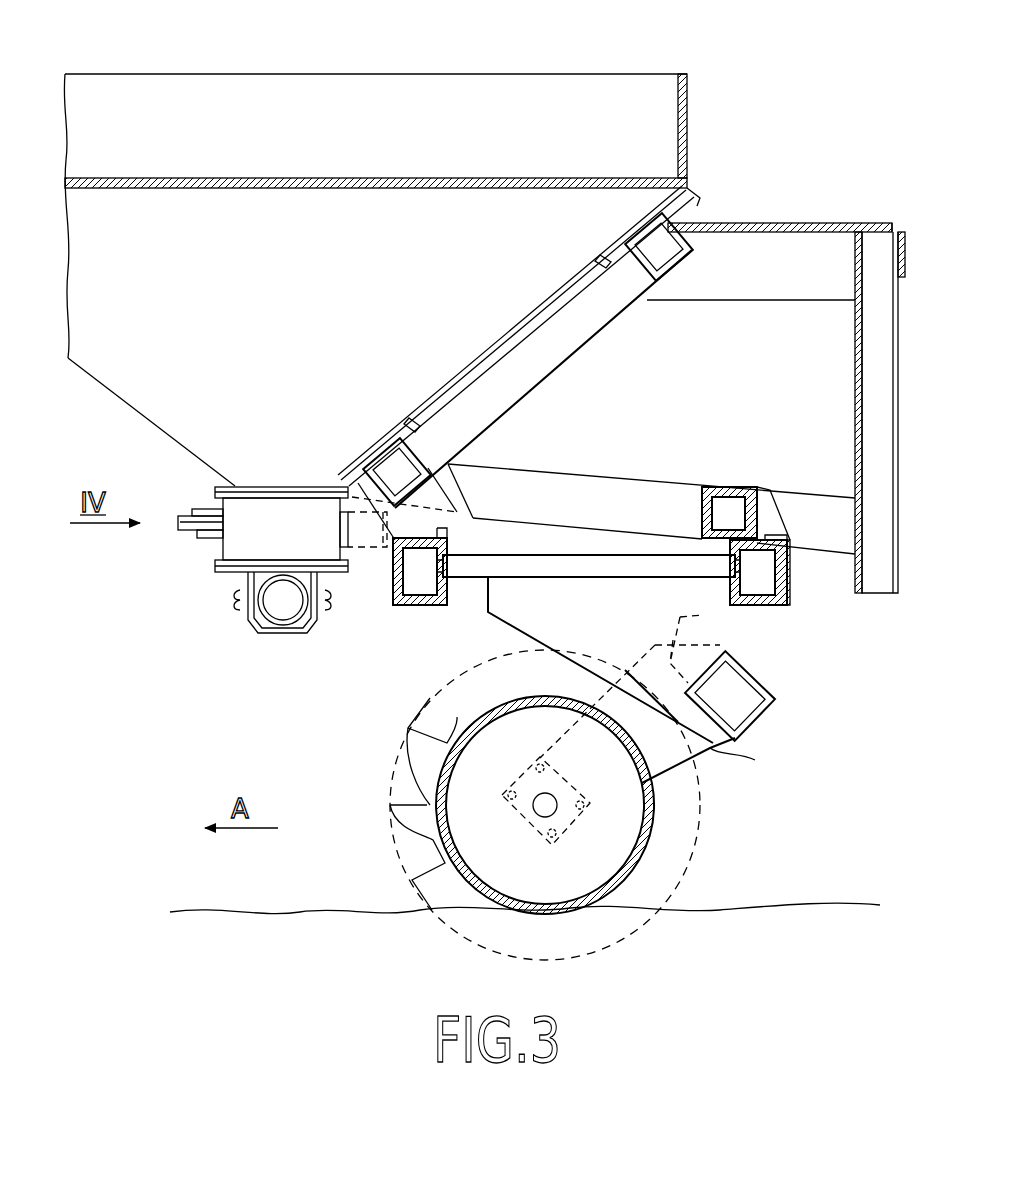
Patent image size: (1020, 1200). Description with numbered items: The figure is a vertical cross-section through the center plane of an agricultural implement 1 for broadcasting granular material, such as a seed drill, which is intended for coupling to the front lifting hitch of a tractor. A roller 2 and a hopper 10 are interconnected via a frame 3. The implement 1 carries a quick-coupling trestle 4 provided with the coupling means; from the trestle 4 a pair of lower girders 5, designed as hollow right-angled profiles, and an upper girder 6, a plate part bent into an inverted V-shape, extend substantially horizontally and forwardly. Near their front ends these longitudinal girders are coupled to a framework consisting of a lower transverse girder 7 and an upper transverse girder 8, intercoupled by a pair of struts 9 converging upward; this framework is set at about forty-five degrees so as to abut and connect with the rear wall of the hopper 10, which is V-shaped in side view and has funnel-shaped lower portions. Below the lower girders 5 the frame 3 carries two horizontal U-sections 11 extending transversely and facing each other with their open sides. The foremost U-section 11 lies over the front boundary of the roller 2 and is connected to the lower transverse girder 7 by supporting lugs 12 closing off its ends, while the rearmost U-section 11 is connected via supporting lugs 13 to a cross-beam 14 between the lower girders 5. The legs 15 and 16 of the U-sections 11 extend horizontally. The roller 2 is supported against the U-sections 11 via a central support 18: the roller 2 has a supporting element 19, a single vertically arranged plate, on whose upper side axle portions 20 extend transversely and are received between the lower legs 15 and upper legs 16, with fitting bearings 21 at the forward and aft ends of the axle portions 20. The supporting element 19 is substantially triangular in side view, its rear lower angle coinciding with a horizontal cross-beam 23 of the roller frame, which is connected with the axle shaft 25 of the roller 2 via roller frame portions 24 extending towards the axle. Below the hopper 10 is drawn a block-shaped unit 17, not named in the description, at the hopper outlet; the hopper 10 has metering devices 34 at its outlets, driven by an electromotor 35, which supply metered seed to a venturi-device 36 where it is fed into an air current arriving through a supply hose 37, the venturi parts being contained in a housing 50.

The implement 1 is at (756, 193).
The roller 2 is at (428, 838).
The frame 3 is at (850, 380).
The trestle 4 is at (855, 330).
The lower girders 5 is at (603, 475).
The upper girder 6 is at (700, 300).
The lower transverse girder 7 is at (377, 448).
The upper transverse girder 8 is at (625, 236).
The struts 9 is at (512, 345).
The hopper 10 is at (571, 78).
The U-sections 11 is at (390, 608).
The supporting lugs 12 is at (440, 470).
The supporting lugs 13 is at (788, 540).
The cross-beam 14 is at (724, 487).
The lower legs 15 is at (417, 605).
The upper legs 16 is at (440, 528).
The metering housing 17 is at (262, 487).
The central support 18 is at (600, 640).
The supporting element 19 is at (527, 625).
The axle portions 20 is at (590, 565).
The bearings 21 is at (440, 555).
The cross-beam 23 is at (762, 710).
The roller frame portions 24 is at (715, 760).
The axle shaft 25 is at (540, 800).
The metering devices 34 is at (215, 548).
The electromotor 35 is at (352, 525).
The venturi-device 36 is at (245, 637).
The supply hose 37 is at (275, 650).
The housing 50 is at (305, 648).